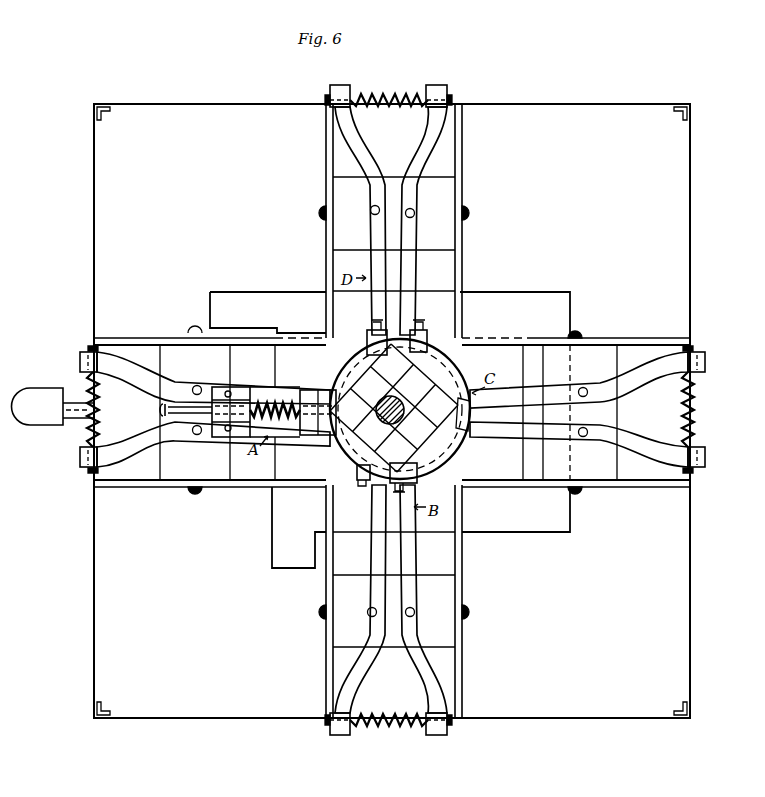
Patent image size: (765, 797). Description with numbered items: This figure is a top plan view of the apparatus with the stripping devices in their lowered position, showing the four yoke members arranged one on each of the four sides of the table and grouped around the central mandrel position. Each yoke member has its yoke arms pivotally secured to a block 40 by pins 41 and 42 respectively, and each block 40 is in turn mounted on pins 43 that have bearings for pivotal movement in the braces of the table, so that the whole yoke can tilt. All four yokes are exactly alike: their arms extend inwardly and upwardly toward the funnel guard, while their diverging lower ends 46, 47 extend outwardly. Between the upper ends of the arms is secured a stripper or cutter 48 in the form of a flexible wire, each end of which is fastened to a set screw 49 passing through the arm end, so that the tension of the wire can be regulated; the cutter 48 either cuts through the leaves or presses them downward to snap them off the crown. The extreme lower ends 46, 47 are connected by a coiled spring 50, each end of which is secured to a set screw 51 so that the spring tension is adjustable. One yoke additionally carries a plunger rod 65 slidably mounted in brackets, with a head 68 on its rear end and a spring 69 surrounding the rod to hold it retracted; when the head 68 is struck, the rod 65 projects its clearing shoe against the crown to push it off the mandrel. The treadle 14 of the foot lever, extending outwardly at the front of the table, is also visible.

The treadle 14 is at (36, 394).
The block 40 is at (442, 187).
The pin 41 is at (384, 200).
The pin 42 is at (413, 213).
The pin 43 is at (468, 213).
The diverging lower end 46 is at (414, 240).
The diverging lower end 47 is at (367, 235).
The stripper or cutter 48 is at (437, 375).
The set screw 49 is at (388, 332).
The coiled spring 50 is at (392, 99).
The set screw 51 is at (92, 348).
The plunger rod 65 is at (182, 413).
The head 68 is at (163, 410).
The spring 69 is at (268, 400).